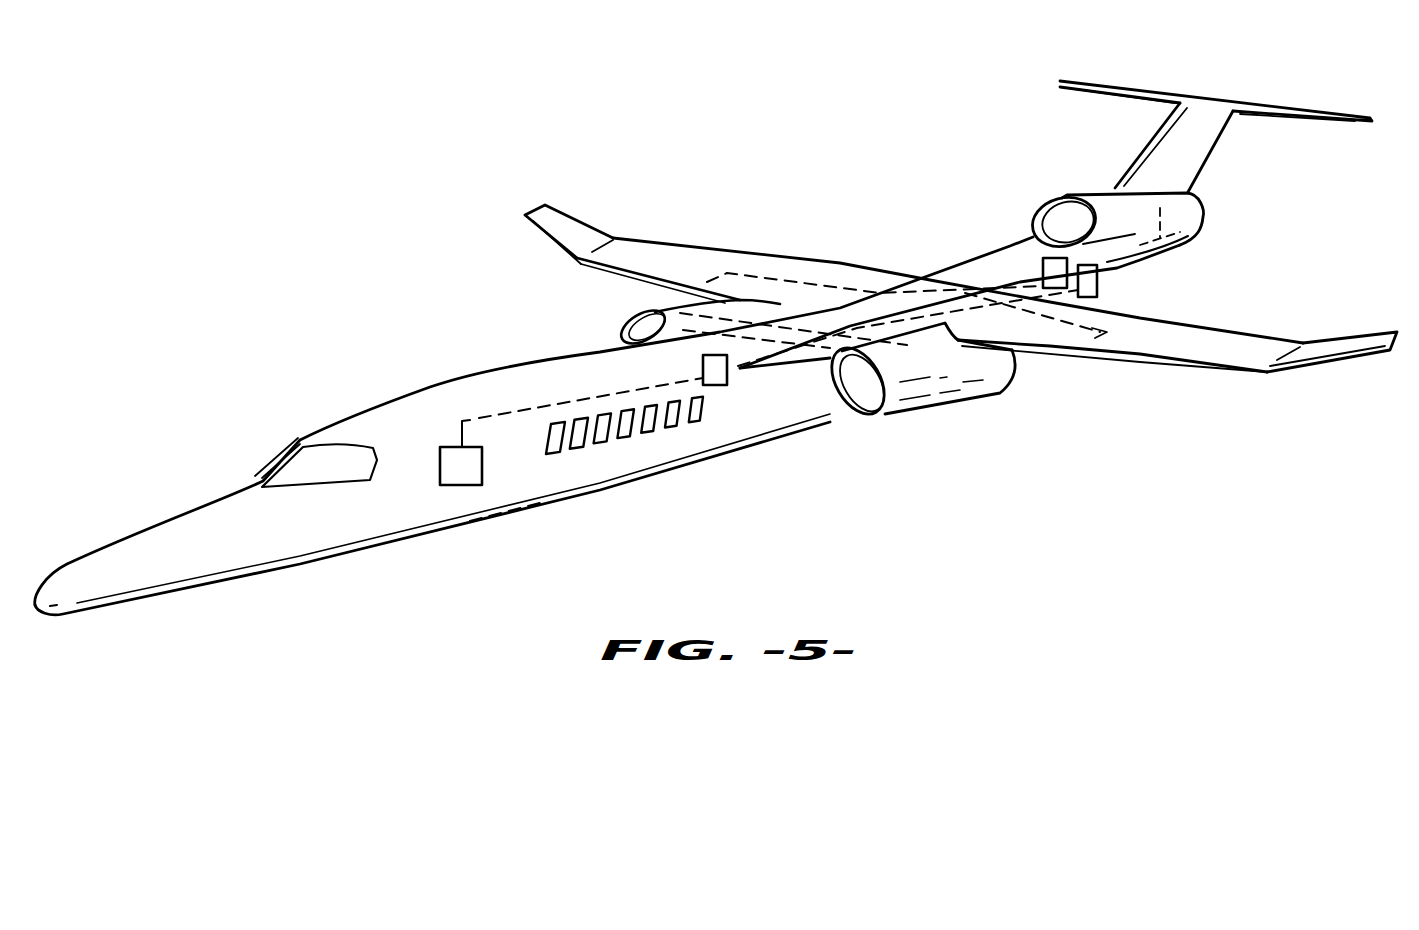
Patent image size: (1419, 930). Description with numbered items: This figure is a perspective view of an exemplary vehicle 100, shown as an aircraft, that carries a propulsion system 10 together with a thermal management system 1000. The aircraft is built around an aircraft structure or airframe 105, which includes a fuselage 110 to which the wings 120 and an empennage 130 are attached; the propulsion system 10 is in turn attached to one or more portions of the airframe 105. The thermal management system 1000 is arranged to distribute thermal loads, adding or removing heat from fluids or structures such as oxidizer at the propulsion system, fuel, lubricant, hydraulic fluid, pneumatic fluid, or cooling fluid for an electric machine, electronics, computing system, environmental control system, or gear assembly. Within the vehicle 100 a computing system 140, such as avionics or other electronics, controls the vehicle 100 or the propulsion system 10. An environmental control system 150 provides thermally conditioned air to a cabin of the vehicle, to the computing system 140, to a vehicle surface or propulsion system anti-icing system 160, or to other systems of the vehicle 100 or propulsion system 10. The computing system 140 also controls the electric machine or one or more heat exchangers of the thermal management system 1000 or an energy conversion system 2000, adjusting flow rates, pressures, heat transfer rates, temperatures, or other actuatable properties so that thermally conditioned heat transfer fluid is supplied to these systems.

The vehicle 100 is at (285, 188).
The airframe 105 is at (522, 324).
The fuselage 110 is at (643, 452).
The wings 120 is at (713, 265).
The empennage 130 is at (1230, 155).
The computing system 140 is at (482, 467).
The environmental control system 150 is at (727, 373).
The anti-icing system 160 is at (1057, 356).
The propulsion system 10 is at (662, 317).
The thermal management system 1000 is at (1043, 270).
The energy conversion system 2000 is at (1097, 285).